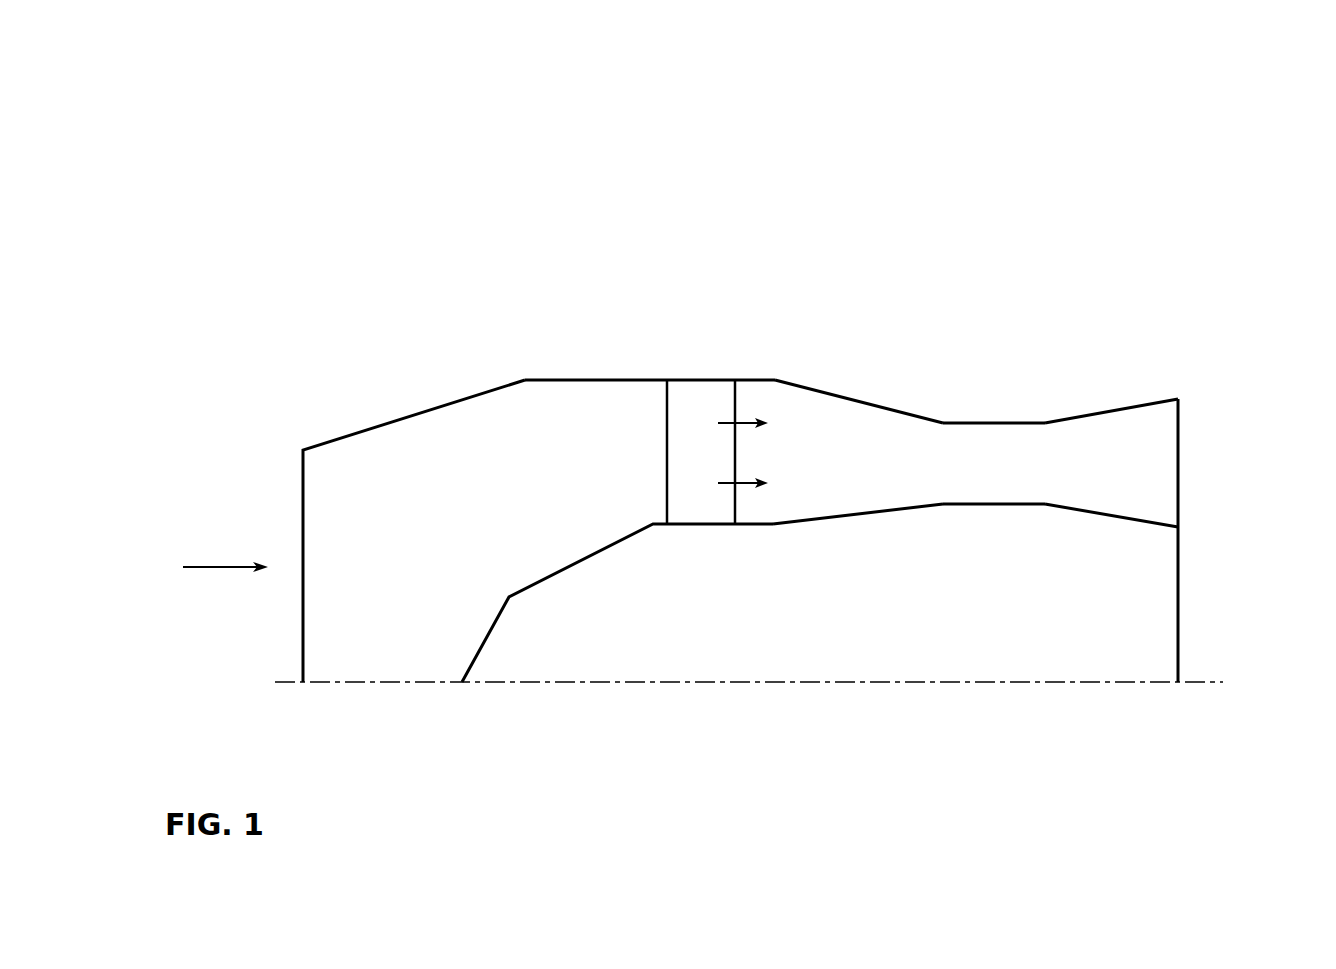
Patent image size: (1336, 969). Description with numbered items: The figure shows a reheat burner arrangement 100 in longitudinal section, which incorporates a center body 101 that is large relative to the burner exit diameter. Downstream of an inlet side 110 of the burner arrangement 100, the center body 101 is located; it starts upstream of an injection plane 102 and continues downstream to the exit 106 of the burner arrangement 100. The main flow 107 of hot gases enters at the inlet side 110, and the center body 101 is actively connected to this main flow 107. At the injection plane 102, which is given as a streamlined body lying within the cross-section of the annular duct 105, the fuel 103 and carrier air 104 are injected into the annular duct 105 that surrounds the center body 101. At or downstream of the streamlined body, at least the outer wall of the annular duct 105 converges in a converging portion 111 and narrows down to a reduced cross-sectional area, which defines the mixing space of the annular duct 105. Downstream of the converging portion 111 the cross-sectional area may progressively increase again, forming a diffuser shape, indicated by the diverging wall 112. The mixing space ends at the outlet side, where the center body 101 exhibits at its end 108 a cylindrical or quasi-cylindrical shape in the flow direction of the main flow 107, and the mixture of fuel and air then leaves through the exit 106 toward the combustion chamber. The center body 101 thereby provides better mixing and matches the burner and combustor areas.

The reheat burner arrangement 100 is at (777, 272).
The center body 101 is at (1101, 576).
The injection plane 102 is at (669, 378).
The fuel 103 is at (722, 330).
The carrier air 104 is at (746, 478).
The annular duct 105 is at (1003, 455).
The exit 106 is at (1322, 664).
The main flow 107 is at (222, 562).
The end of center body 108 is at (1182, 527).
The inlet side 110 is at (400, 647).
The converging portion 111 is at (877, 400).
The diverging wall 112 is at (1125, 402).